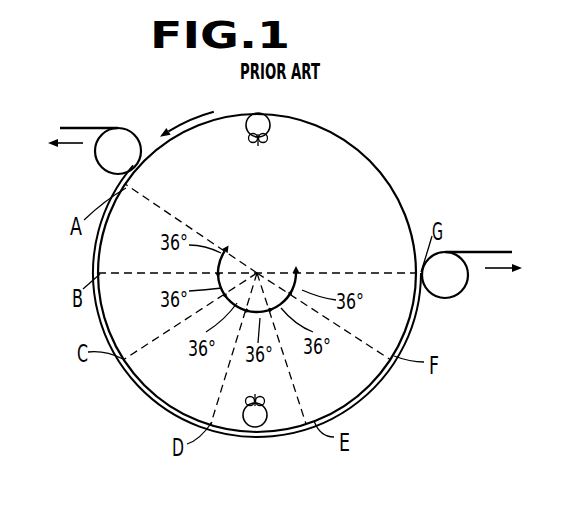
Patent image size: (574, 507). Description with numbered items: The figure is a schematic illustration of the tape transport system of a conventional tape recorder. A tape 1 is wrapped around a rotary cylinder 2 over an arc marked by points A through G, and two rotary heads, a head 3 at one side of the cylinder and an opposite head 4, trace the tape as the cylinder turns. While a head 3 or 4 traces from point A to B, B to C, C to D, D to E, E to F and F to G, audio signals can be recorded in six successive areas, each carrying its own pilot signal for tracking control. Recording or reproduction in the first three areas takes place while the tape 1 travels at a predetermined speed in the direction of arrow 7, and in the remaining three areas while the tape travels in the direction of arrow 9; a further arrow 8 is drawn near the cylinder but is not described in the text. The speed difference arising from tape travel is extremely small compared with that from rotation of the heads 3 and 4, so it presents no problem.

The tape 1 is at (475, 252).
The cylinder 2 is at (399, 209).
The head 3 is at (272, 128).
The head 4 is at (268, 410).
The arrow 7 is at (497, 268).
The drum rotation direction arrow 8 is at (186, 123).
The arrow 9 is at (72, 146).